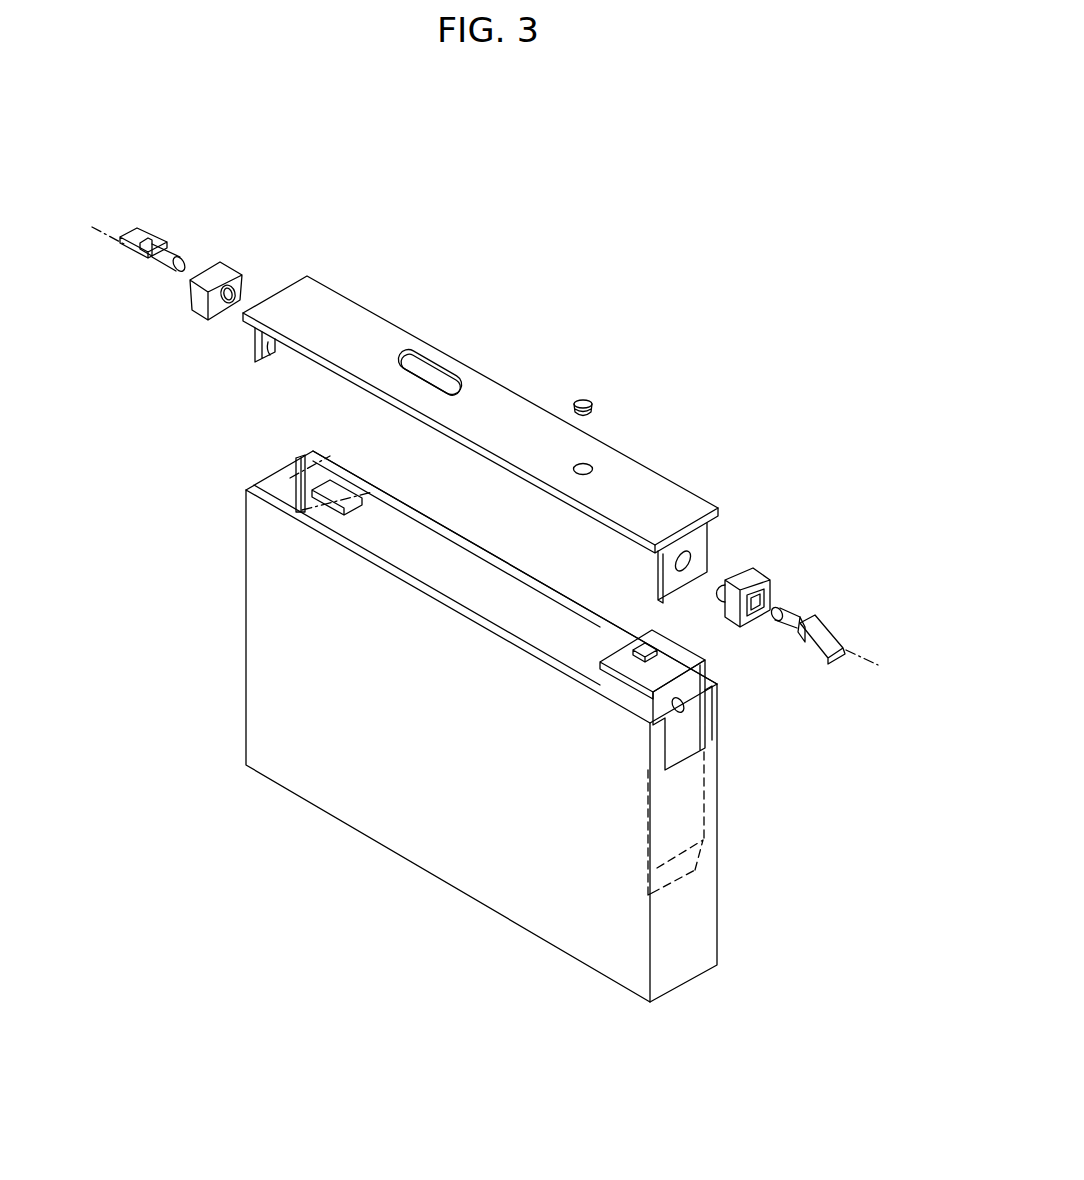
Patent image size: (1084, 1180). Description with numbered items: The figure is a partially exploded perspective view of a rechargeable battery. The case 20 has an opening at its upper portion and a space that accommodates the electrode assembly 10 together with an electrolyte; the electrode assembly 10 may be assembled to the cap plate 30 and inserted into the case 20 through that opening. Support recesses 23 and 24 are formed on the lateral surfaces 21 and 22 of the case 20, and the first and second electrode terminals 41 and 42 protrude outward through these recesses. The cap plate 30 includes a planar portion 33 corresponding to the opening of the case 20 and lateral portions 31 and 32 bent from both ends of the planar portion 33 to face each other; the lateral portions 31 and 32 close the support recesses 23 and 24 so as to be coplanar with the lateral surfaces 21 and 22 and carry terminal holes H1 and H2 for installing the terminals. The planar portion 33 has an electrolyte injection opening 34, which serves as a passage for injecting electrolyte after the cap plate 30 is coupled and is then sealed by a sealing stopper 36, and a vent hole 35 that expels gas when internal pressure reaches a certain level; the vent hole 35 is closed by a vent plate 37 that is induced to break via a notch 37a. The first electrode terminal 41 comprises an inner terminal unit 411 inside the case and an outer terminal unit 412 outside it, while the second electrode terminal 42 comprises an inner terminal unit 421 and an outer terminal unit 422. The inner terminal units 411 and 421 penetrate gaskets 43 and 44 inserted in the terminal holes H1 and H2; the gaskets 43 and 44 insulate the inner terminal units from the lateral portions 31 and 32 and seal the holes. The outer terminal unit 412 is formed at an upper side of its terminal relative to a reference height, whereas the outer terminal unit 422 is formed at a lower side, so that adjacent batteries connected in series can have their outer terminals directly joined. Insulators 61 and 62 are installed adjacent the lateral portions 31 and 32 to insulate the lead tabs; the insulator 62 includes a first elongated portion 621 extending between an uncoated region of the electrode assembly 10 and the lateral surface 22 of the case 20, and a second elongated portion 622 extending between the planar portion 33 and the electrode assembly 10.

The electrode assembly 10 is at (435, 572).
The case 20 is at (482, 726).
The lateral surface 21 is at (246, 566).
The lateral surface 22 is at (708, 915).
The support recess 23 is at (290, 478).
The support recess 24 is at (715, 732).
The cap plate 30 is at (477, 439).
The lateral portion 31 is at (240, 372).
The lateral portion 32 is at (712, 554).
The planar portion 33 is at (528, 432).
The electrolyte injection opening 34 is at (590, 465).
The vent hole 35 is at (462, 383).
The sealing stopper 36 is at (590, 399).
The vent plate 37 is at (436, 341).
The notch 37a is at (413, 372).
The first electrode terminal 41 is at (176, 260).
The inner terminal unit 411 is at (160, 278).
The outer terminal unit 412 is at (142, 232).
The second electrode terminal 42 is at (821, 603).
The inner terminal unit 421 is at (785, 623).
The outer terminal unit 422 is at (830, 640).
The gasket 43 is at (196, 318).
The gasket 44 is at (735, 610).
The insulator 61 is at (340, 475).
The insulator 62 is at (681, 692).
The first elongated portion 621 is at (700, 762).
The second elongated portion 622 is at (658, 640).
The terminal hole H1 is at (276, 360).
The terminal hole H2 is at (694, 561).